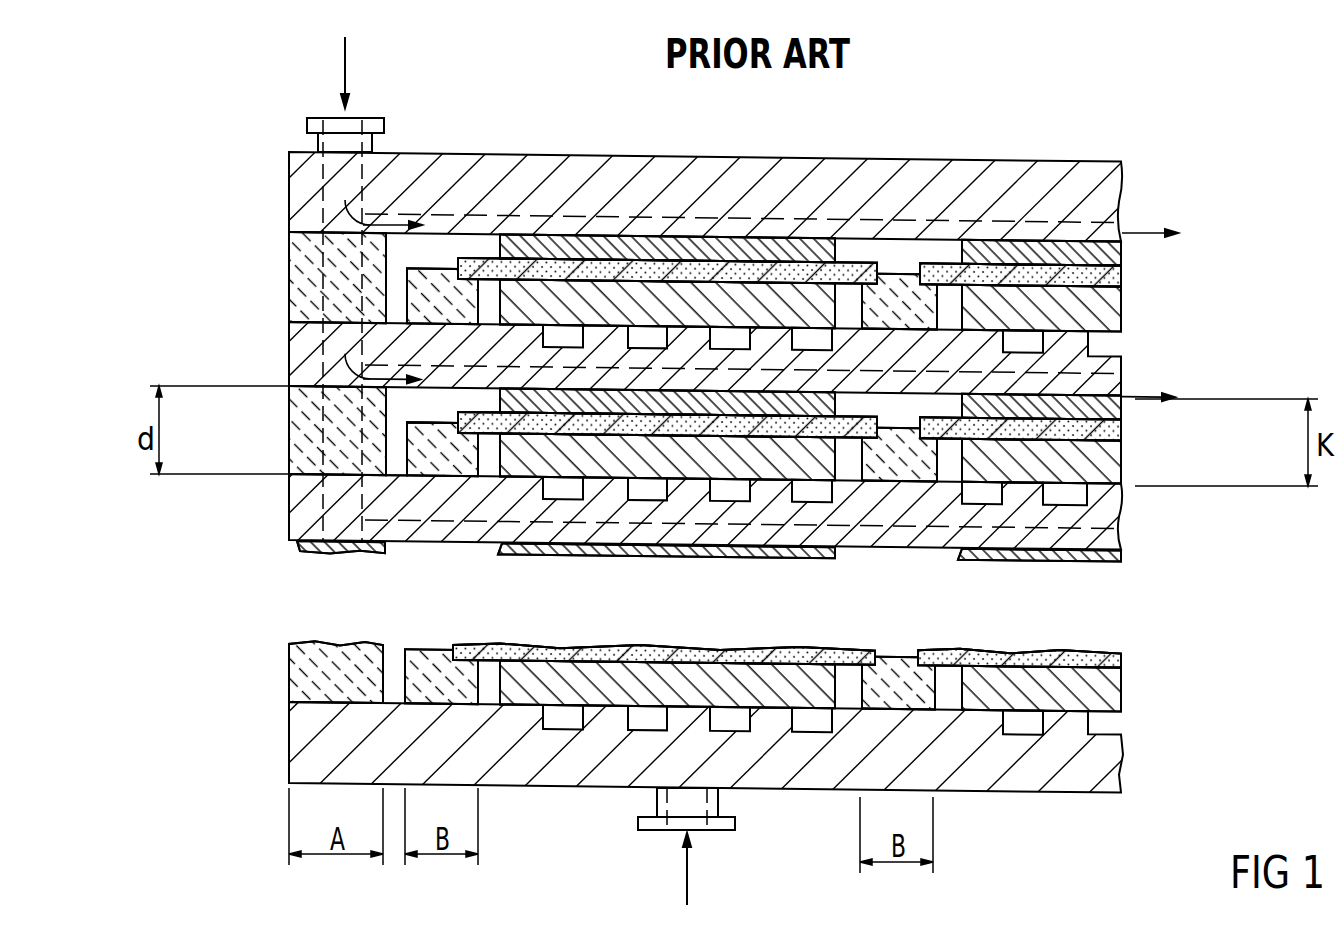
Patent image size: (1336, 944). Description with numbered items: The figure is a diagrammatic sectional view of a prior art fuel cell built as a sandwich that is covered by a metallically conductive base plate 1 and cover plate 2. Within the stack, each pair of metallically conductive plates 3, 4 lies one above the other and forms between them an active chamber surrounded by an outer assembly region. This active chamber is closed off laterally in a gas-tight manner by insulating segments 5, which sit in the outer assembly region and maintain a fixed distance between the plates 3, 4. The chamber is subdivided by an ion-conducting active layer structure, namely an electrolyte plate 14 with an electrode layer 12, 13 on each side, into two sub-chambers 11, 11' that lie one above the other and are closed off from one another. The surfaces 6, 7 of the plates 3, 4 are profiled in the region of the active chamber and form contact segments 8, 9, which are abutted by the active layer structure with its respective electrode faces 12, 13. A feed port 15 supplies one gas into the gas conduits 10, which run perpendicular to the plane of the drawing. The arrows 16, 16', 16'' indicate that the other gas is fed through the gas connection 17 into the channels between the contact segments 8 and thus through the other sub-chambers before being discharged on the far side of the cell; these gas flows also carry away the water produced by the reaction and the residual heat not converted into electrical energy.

The base plate 1 is at (1088, 773).
The cover plate 2 is at (1095, 176).
The metallically conductive plate 3 is at (303, 345).
The metallically conductive plate 4 is at (310, 522).
The insulating segment 5 is at (312, 445).
The surface of plate 6 is at (1122, 252).
The surface of plate 7 is at (1107, 480).
The contact segment 8 is at (1095, 383).
The contact segment 9 is at (1020, 493).
The gas conduit 10 is at (980, 493).
The sub-chamber 11 is at (360, 431).
The sub-chamber 11' is at (447, 520).
The electrode layer 12 is at (612, 400).
The electrode layer 13 is at (697, 452).
The electrolyte plate 14 is at (1103, 433).
The feed port 15 is at (735, 822).
The arrow 16 is at (379, 68).
The arrow 16' is at (411, 155).
The arrow 16'' is at (1181, 214).
The gas connection 17 is at (312, 120).